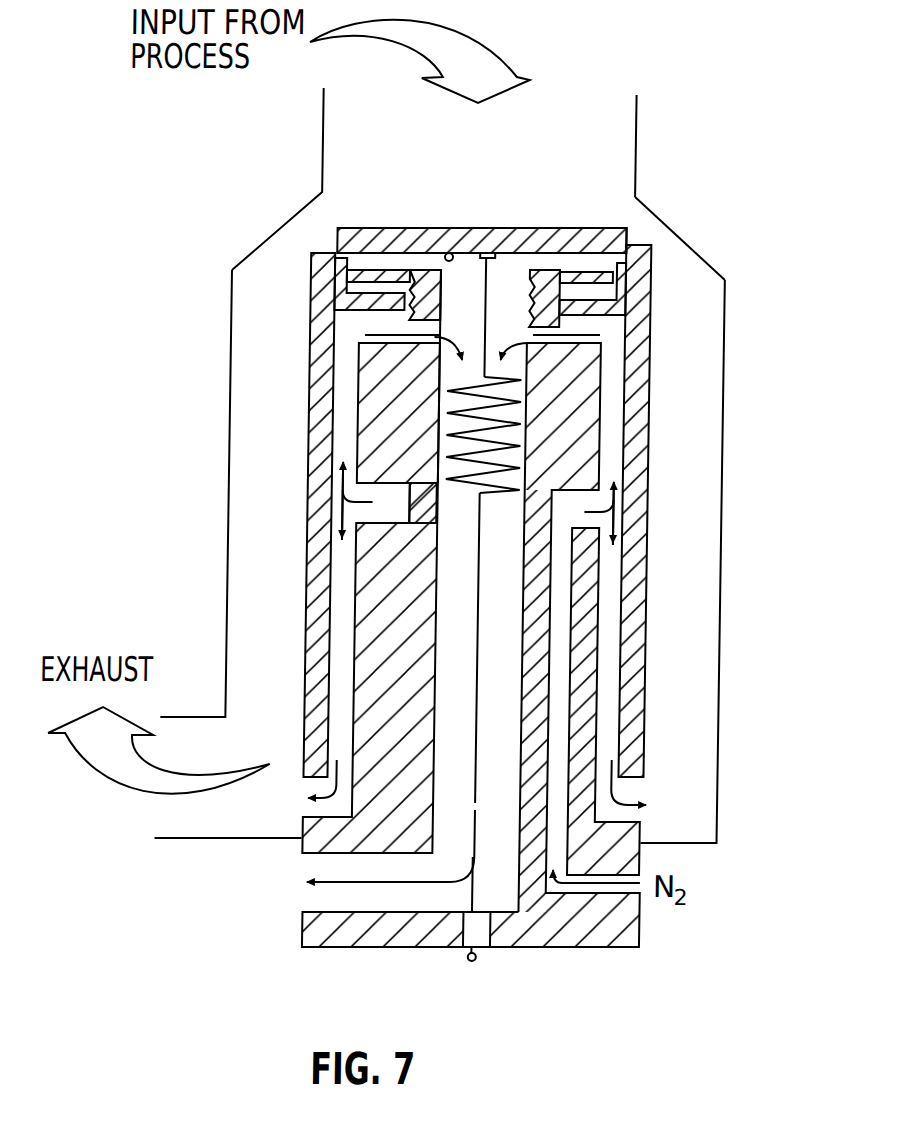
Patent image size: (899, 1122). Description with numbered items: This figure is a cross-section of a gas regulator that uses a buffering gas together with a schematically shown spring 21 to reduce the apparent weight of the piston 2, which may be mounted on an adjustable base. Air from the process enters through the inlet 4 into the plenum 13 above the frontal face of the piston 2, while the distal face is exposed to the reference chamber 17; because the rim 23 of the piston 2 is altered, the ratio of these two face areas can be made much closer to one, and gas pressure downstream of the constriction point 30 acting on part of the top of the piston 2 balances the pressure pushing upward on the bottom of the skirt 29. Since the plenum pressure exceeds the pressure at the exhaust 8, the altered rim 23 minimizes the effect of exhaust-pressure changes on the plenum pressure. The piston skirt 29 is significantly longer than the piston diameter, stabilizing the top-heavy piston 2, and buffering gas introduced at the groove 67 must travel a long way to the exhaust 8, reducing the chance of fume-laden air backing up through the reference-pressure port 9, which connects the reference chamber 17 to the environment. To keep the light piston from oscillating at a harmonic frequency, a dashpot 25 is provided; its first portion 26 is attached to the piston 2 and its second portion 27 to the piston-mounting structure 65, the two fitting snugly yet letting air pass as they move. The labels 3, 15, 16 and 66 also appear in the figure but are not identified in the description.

The piston 2 is at (525, 252).
The outer housing 3 is at (729, 327).
The inlet 4 is at (640, 107).
The exhaust 8 is at (198, 717).
The reference-pressure port 9 is at (316, 912).
The plenum 13 is at (505, 151).
The cover end 15 is at (568, 228).
The seal 16 is at (456, 254).
The reference chamber 17 is at (522, 306).
The spring 21 is at (507, 493).
The rim 23 is at (326, 248).
The dashpot 25 is at (672, 287).
The first portion 26 is at (338, 322).
The second portion 27 is at (367, 280).
The piston skirt 29 is at (337, 498).
The constriction point 30 is at (643, 223).
The piston-mounting structure 65 is at (381, 594).
The nitrogen inlet foot 66 is at (653, 875).
The groove 67 is at (607, 483).